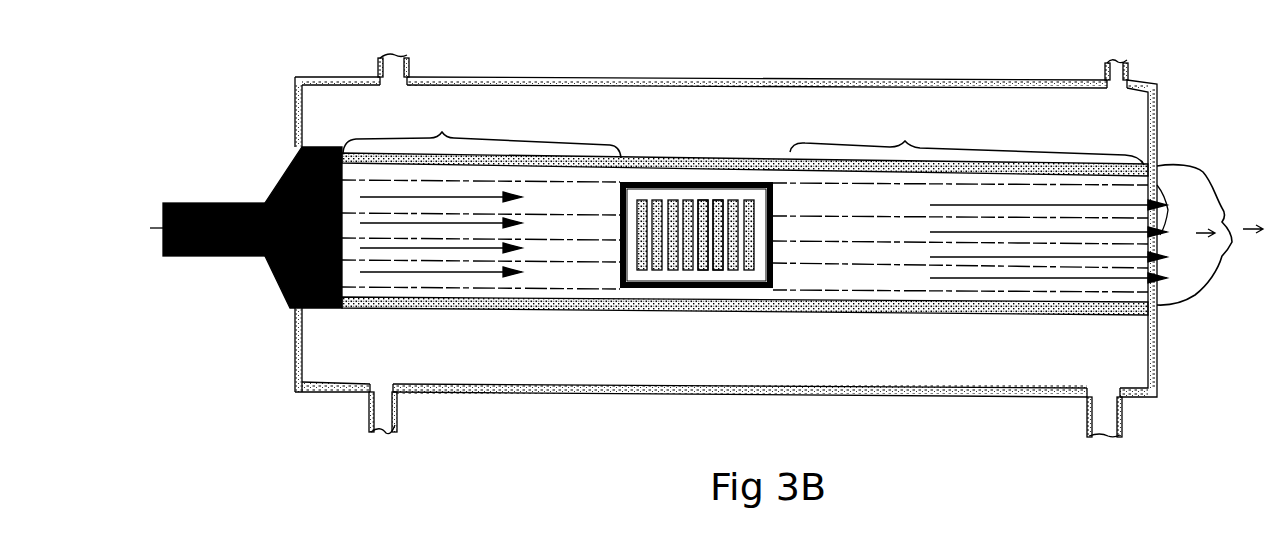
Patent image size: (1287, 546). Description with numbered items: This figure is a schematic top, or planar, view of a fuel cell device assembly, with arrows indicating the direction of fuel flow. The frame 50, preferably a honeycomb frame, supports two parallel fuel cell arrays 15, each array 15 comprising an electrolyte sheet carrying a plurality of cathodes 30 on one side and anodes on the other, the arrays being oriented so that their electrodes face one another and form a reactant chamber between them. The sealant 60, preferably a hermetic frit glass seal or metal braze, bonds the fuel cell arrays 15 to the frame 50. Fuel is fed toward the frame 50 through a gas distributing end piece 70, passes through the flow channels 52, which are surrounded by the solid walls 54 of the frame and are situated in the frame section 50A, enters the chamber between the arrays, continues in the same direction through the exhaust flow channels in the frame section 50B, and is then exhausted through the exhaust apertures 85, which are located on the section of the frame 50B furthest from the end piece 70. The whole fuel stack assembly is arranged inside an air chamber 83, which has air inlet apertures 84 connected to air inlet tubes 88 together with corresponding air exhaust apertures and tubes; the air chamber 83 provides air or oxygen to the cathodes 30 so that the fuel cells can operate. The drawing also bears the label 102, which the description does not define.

The heat exchanger assembly 102 is at (1086, 15).
The air chamber 83 is at (750, 108).
The frame 50 is at (1146, 158).
The frame section 50A is at (482, 133).
The frame section 50B is at (967, 140).
The gas distributing end piece 70 is at (280, 178).
The sealant 60 is at (633, 195).
The fuel cell array 15 is at (668, 200).
The cathodes 30 is at (718, 200).
The flow channels 52 is at (872, 292).
The solid walls 54 is at (900, 250).
The air inlet aperture 84 is at (394, 84).
The air inlet tube 88 is at (408, 60).
The exhaust apertures 85 is at (1210, 235).